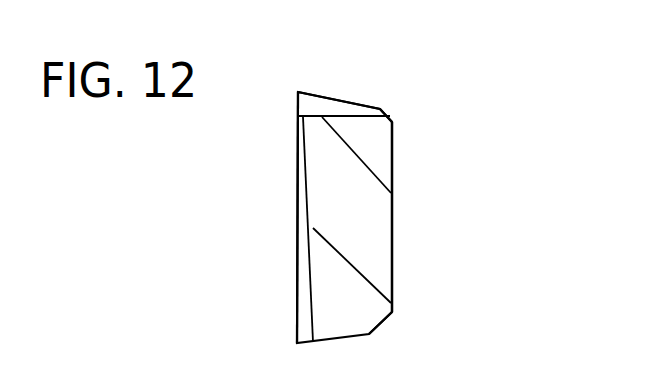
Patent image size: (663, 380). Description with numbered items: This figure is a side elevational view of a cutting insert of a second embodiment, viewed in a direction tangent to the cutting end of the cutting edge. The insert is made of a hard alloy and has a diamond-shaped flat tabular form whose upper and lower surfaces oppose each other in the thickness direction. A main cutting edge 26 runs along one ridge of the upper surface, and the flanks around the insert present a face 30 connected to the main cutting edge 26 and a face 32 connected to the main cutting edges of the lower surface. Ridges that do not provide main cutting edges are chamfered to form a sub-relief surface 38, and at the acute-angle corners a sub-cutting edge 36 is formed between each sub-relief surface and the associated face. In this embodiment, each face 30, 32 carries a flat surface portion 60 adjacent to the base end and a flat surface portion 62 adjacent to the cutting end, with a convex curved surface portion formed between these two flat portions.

The main cutting edge 26 is at (392, 242).
The face 32 is at (333, 106).
The sub-cutting edge 36 is at (381, 113).
The flat surface portion 60 is at (380, 141).
The face 30 is at (340, 197).
The flat surface portion 62 is at (338, 298).
The sub-relief surface 38 is at (300, 272).